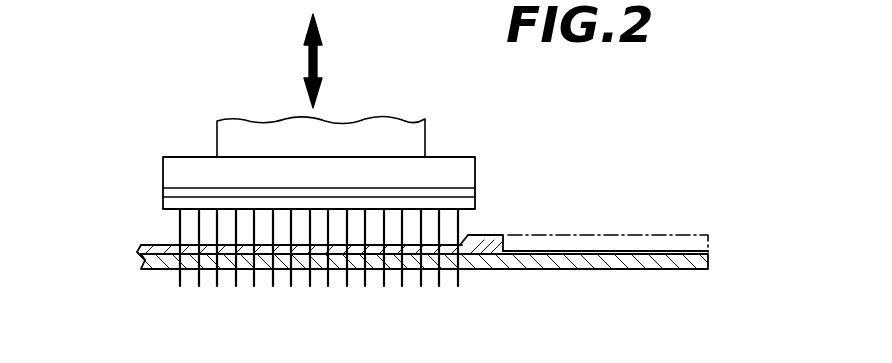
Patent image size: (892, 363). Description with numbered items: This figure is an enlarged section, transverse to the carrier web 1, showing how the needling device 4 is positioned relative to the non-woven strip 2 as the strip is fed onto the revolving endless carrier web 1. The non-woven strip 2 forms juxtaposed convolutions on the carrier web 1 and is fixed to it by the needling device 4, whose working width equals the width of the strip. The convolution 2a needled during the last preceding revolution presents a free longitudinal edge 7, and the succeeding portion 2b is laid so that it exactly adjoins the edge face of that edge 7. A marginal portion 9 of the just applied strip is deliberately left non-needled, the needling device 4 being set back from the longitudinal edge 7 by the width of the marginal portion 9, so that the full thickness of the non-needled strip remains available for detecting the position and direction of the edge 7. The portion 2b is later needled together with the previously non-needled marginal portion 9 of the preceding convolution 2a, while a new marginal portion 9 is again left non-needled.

The carrier web 1 is at (660, 262).
The non-woven strip 2 is at (160, 252).
The convolution of the non-woven strip 2a is at (354, 250).
The portion of the non-woven strip 2b is at (596, 245).
The needling device 4 is at (267, 171).
The free longitudinal edge 7 is at (515, 243).
The marginal portion 9 is at (485, 242).